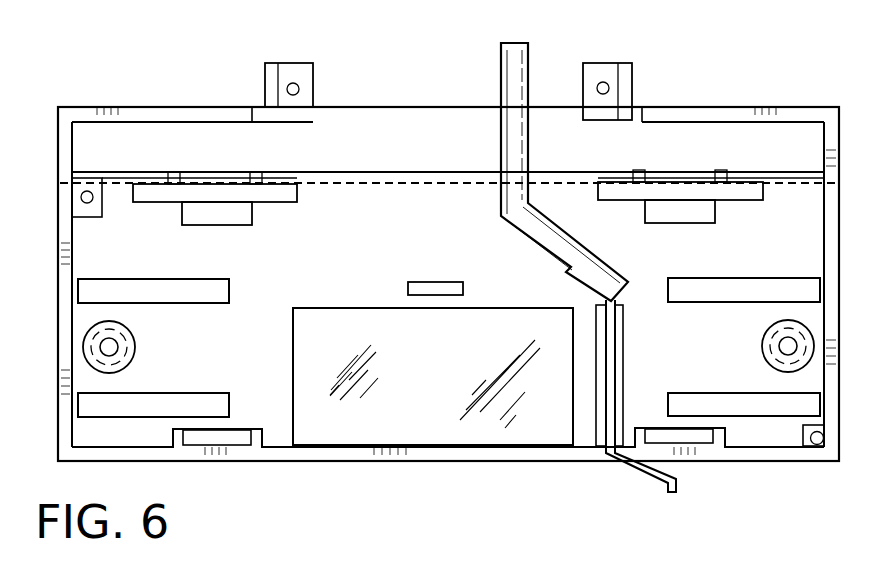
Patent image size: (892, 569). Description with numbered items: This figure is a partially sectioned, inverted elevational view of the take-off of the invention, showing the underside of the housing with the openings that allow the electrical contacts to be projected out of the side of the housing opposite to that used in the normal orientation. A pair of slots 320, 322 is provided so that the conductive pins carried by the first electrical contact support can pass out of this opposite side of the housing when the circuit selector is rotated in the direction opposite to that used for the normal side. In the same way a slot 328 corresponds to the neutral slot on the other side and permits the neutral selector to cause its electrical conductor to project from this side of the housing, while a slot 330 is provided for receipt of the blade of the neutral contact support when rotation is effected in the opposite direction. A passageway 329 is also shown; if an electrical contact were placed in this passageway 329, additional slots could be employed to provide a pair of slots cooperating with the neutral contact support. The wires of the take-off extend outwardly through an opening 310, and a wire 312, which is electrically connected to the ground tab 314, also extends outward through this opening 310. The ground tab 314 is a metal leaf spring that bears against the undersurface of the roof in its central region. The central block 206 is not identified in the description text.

The battery 206 is at (460, 397).
The opening 310 is at (342, 143).
The wire 312 is at (528, 73).
The ground tab 314 is at (637, 472).
The slot 320 is at (213, 279).
The slot 322 is at (168, 393).
The slot 328 is at (720, 393).
The passageway 329 is at (725, 278).
The slot 330 is at (155, 184).